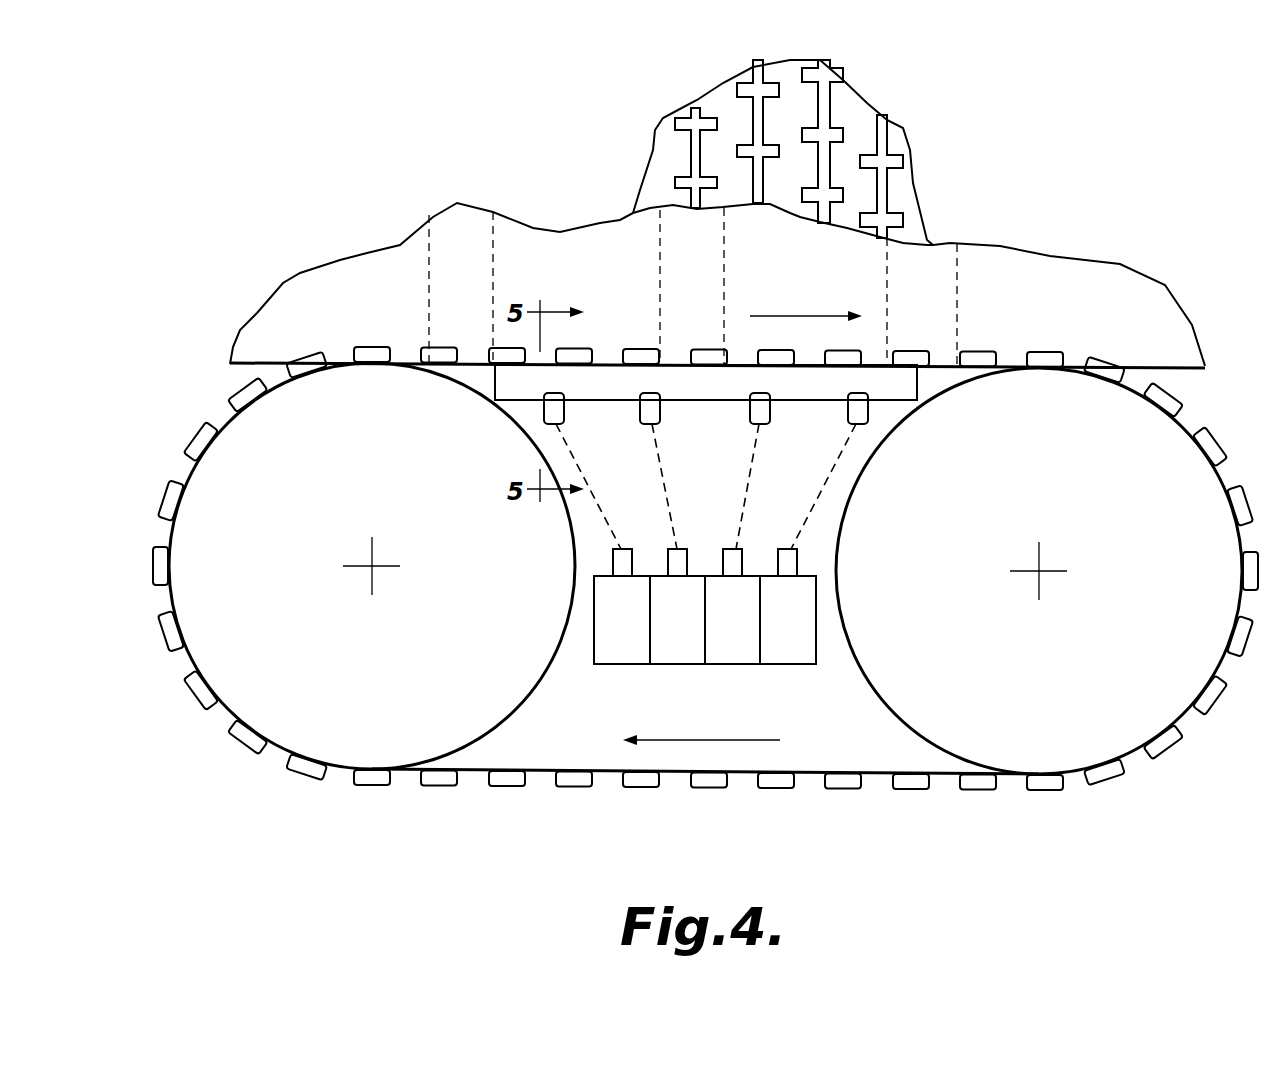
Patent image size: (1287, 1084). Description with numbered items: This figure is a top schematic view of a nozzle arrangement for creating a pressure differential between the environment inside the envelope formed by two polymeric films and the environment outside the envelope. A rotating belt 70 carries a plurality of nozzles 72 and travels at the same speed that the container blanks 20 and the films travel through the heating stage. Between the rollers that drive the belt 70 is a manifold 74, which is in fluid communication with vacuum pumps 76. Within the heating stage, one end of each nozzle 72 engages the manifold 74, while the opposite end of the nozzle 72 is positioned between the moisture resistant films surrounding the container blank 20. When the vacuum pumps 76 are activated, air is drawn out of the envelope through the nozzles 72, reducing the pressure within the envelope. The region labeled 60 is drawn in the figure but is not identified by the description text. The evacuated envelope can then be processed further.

The container blank 20 is at (325, 297).
The fabric part with crosses 60 is at (578, 187).
The rotating belt 70 is at (815, 770).
The nozzle 72 is at (247, 388).
The manifold 74 is at (482, 372).
The vacuum pump 76 is at (627, 665).